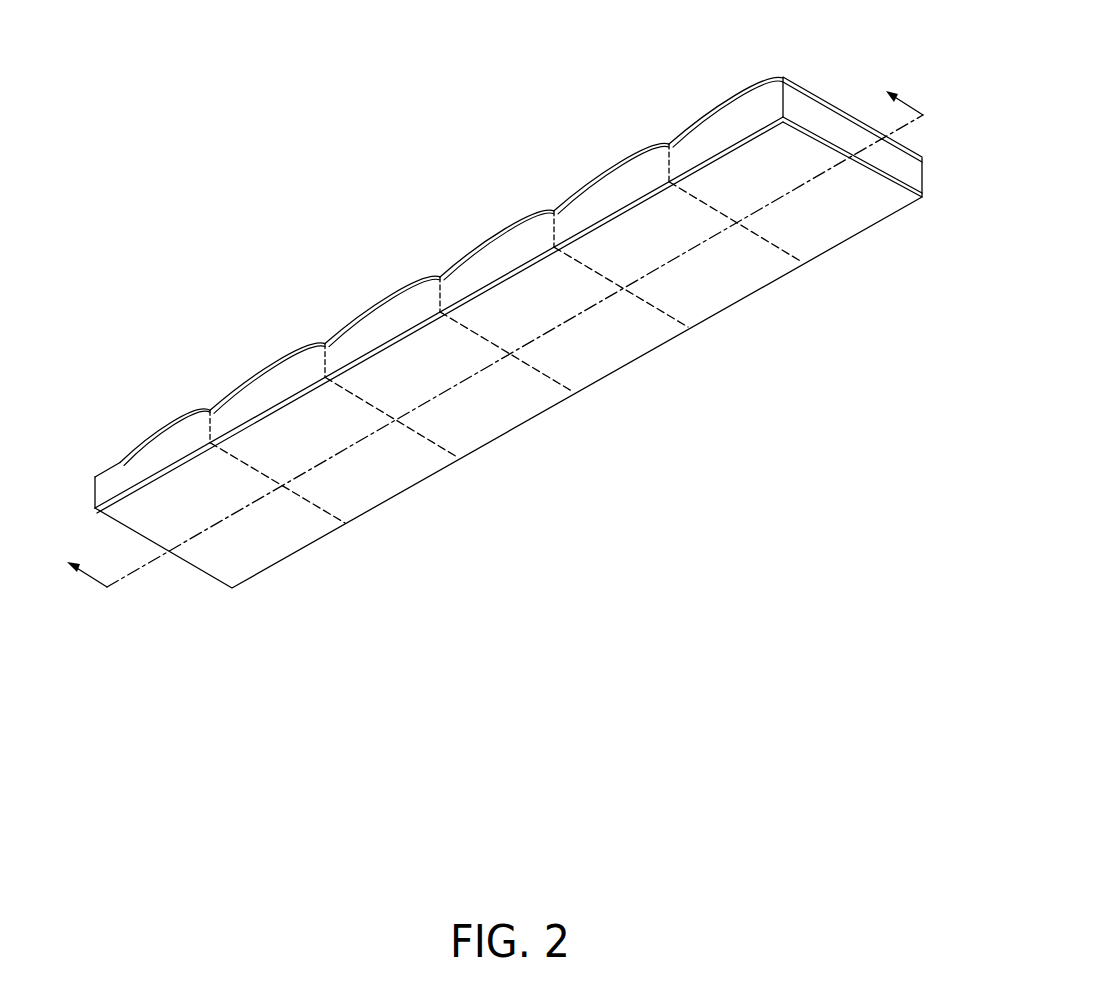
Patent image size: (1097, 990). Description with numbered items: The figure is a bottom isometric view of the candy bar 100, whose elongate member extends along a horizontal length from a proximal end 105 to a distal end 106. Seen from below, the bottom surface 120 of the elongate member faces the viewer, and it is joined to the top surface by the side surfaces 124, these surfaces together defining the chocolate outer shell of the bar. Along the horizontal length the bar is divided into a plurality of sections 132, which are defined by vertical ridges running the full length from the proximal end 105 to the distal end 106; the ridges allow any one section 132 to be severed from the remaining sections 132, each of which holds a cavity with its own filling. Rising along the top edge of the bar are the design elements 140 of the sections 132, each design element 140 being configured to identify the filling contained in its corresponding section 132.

The candy bar 100 is at (253, 167).
The proximal end 105 is at (150, 597).
The distal end 106 is at (873, 61).
The bottom surface 120 is at (268, 552).
The side surfaces 124 is at (127, 475).
The sections 132 is at (345, 523).
The design element 140 is at (397, 290).